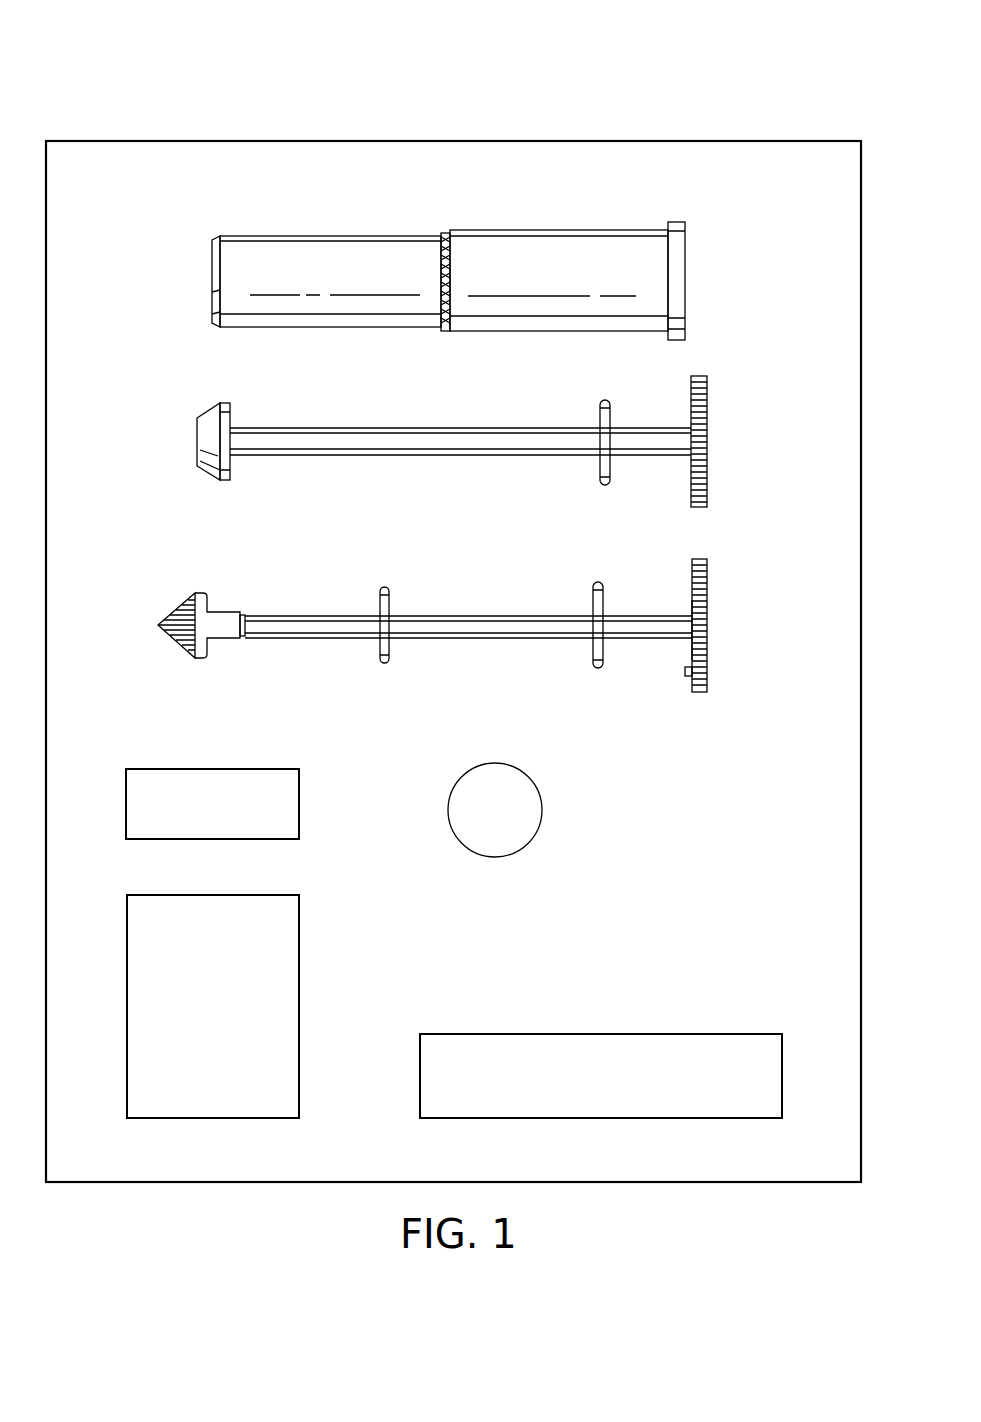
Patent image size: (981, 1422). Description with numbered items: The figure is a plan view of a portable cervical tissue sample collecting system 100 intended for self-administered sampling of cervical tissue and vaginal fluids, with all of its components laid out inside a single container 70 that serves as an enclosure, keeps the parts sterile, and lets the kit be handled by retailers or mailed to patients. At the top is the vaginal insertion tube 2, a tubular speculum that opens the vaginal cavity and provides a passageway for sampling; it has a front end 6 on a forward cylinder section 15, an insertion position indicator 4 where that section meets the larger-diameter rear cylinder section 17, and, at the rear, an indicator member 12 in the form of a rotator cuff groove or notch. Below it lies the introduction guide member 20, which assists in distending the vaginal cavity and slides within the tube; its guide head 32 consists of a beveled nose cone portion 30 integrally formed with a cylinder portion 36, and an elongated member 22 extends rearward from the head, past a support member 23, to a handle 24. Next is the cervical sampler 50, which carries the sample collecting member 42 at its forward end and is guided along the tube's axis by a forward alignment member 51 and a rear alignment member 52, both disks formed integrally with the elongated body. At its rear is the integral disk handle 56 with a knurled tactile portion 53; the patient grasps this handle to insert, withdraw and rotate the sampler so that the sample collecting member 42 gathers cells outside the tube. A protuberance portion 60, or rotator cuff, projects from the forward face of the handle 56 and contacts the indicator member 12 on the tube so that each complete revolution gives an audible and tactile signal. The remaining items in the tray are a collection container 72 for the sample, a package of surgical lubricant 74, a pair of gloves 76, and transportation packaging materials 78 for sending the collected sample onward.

The portable cervical tissue sample collecting system 100 is at (705, 90).
The container 70 is at (778, 140).
The vaginal insertion tube 2 is at (453, 254).
The insertion position indicator 4 is at (452, 253).
The front end 6 is at (212, 258).
The indicator member 12 is at (684, 282).
The forward cylinder section 15 is at (336, 236).
The rear cylinder section 17 is at (563, 230).
The introduction guide member 20 is at (457, 429).
The elongated member 22 is at (434, 428).
The support member 23 is at (612, 460).
The handle 24 is at (708, 402).
The nose cone portion 30 is at (217, 416).
The guide head 32 is at (198, 420).
The cylinder portion 36 is at (231, 404).
The sample collecting member 42 is at (172, 660).
The cervical sampler 50 is at (444, 620).
The forward alignment member 51 is at (390, 655).
The rear alignment member 52 is at (593, 658).
The tactile portion 53 is at (708, 572).
The disk handle 56 is at (708, 640).
The protuberance portion 60 is at (685, 672).
The collection container 72 is at (540, 784).
The package of surgical lubricant 74 is at (299, 822).
The pair of gloves 76 is at (299, 935).
The transportation packaging materials 78 is at (667, 1034).